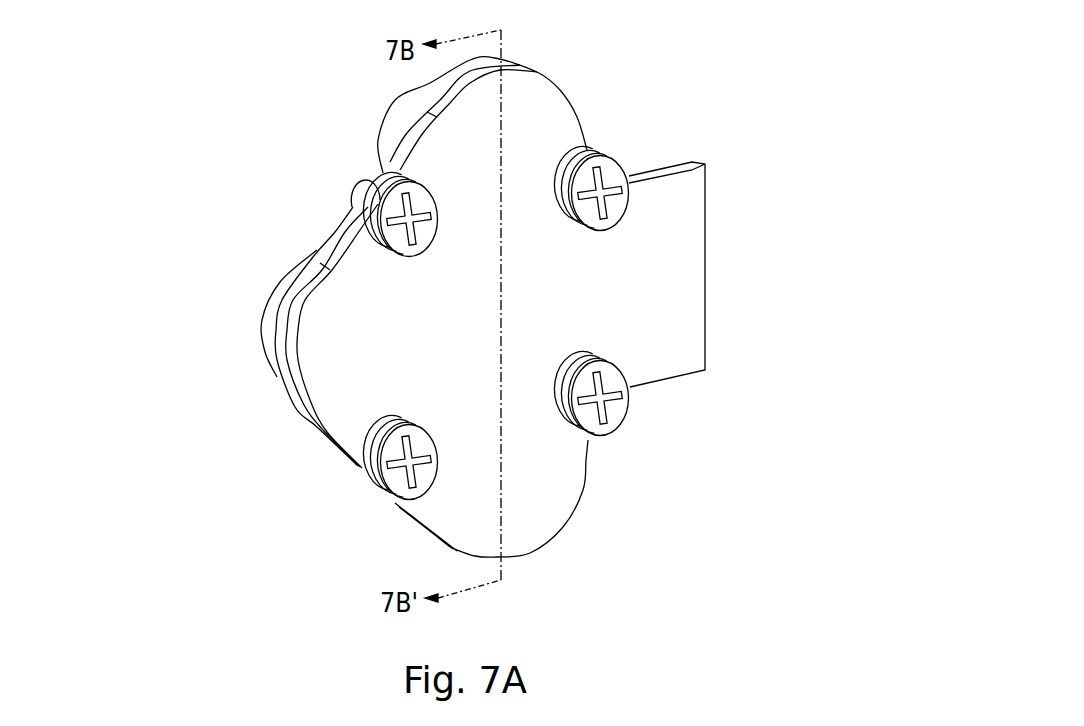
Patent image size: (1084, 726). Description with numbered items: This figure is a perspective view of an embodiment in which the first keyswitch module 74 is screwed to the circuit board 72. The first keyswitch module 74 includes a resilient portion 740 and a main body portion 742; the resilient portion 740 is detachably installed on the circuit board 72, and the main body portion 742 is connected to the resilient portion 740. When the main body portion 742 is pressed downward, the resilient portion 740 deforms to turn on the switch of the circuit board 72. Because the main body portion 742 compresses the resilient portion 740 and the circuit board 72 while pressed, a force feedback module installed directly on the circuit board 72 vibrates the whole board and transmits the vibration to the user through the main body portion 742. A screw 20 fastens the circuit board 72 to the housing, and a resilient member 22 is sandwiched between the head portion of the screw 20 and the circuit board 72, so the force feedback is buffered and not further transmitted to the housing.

The first keyswitch module 74 is at (652, 62).
The circuit board 72 is at (683, 273).
The resilient portion 740 is at (283, 377).
The main body portion 742 is at (273, 298).
The screw 20 is at (360, 192).
The resilient member 22 is at (363, 210).